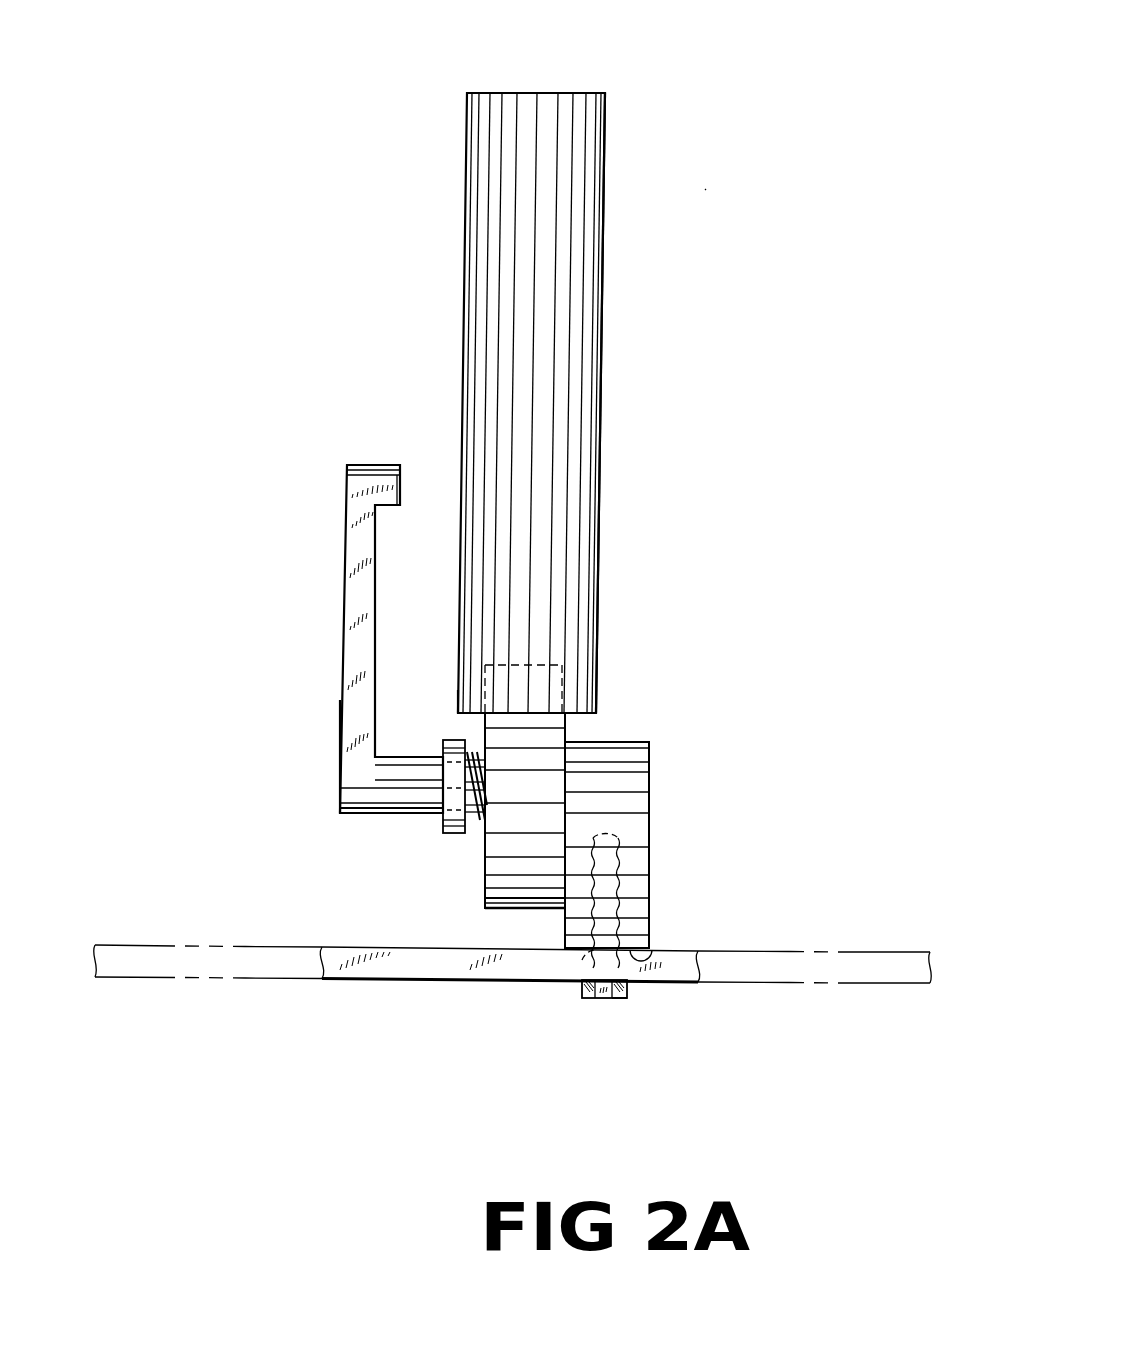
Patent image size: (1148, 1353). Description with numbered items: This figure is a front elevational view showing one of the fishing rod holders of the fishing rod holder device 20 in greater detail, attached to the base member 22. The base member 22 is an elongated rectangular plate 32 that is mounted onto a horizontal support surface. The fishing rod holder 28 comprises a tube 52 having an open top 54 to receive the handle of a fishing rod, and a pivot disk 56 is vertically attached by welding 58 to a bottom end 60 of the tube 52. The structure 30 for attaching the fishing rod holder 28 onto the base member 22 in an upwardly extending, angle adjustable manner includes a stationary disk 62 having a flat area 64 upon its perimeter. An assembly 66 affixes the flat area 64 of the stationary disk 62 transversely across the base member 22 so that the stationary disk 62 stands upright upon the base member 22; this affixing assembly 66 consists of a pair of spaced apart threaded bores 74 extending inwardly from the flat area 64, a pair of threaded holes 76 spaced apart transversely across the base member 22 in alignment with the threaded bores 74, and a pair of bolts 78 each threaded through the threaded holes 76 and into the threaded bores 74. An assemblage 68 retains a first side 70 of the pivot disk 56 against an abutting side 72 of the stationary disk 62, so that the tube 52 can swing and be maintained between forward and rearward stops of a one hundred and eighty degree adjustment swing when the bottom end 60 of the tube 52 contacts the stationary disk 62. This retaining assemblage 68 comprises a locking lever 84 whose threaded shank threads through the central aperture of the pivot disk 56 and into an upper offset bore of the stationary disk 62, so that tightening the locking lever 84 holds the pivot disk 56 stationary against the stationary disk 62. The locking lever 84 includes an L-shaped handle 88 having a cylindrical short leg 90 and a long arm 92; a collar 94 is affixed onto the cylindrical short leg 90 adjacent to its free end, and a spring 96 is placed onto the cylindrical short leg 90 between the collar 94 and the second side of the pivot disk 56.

The fishing rod holder device 20 is at (712, 182).
The base member 22 is at (362, 995).
The fishing rod holder 28 is at (448, 240).
The structure for attaching 30 is at (668, 755).
The elongated rectangular plate 32 is at (440, 980).
The tube 52 is at (620, 268).
The open top 54 is at (546, 93).
The pivot disk 56 is at (466, 895).
The welding 58 is at (540, 712).
The bottom end 60 is at (462, 713).
The stationary disk 62 is at (668, 855).
The flat area 64 is at (655, 950).
The assembly for affixing 66 is at (655, 1012).
The assemblage for retaining 68 is at (286, 552).
The first side 70 is at (567, 727).
The abutting side 72 is at (565, 927).
The threaded bores 74 is at (612, 838).
The threaded holes 76 is at (582, 960).
The bolts 78 is at (608, 1000).
The locking lever 84 is at (326, 648).
The L-shaped handle 88 is at (333, 478).
The cylindrical short leg 90 is at (415, 797).
The long arm 92 is at (355, 738).
The collar 94 is at (452, 835).
The spring 96 is at (480, 760).